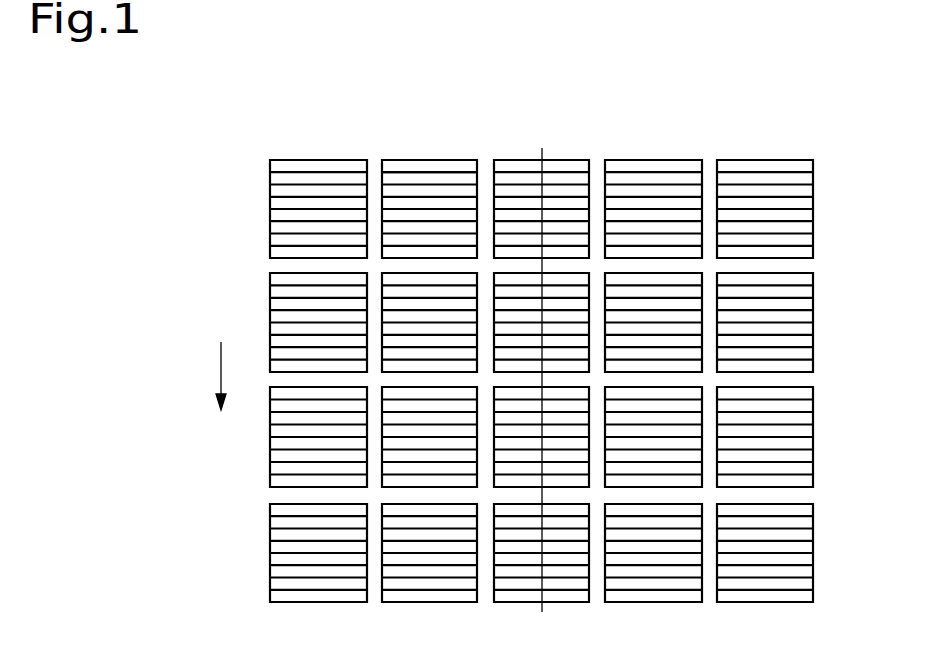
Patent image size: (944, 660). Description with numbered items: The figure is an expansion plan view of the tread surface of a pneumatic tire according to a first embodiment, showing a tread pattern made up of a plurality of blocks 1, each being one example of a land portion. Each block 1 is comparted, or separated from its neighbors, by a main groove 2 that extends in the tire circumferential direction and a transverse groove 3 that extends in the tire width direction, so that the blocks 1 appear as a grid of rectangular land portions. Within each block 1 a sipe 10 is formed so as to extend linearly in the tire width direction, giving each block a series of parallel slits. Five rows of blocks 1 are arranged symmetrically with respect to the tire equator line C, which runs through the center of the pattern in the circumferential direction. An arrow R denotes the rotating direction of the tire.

The block 1 is at (330, 159).
The sipe 10 is at (398, 172).
The main groove 2 is at (376, 605).
The transverse groove 3 is at (815, 261).
The tire equator line C is at (532, 361).
The arrow denoting rotating direction R is at (218, 359).